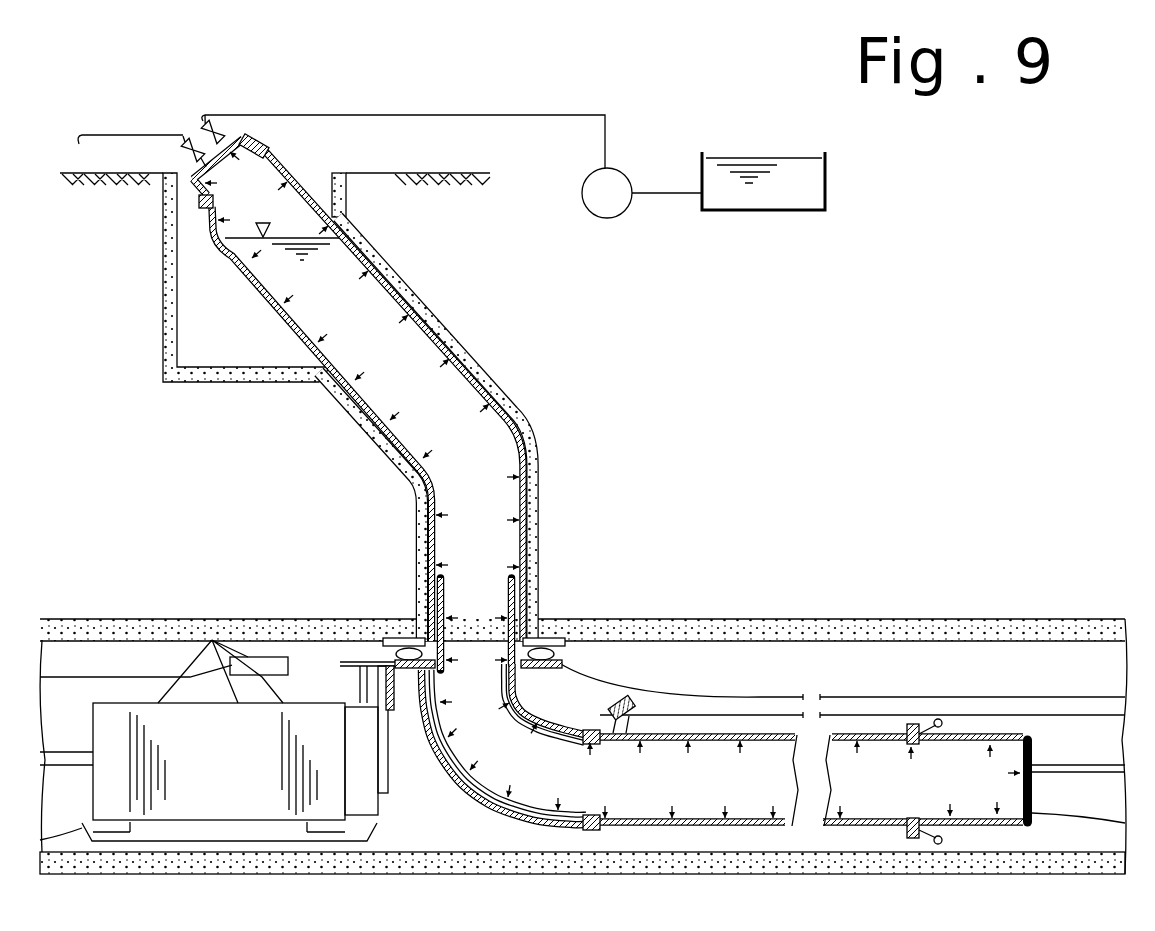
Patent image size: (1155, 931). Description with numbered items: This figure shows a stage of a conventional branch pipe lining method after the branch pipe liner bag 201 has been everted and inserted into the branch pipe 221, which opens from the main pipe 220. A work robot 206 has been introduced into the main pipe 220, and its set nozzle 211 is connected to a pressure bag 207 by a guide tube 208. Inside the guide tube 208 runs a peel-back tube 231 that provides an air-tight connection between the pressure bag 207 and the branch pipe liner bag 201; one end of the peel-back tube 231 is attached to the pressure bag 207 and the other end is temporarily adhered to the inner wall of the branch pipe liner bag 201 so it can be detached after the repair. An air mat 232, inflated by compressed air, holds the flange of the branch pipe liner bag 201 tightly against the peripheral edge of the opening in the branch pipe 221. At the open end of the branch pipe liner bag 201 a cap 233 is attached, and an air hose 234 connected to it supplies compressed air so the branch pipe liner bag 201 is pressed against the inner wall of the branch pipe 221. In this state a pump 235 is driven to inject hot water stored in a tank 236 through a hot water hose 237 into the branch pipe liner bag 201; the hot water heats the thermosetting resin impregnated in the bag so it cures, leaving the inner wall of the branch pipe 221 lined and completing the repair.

The branch pipe liner bag 201 is at (285, 176).
The work robot 206 is at (130, 728).
The pressure bag 207 is at (756, 733).
The guide tube 208 is at (444, 768).
The set nozzle 211 is at (380, 690).
The main pipe 220 is at (886, 620).
The branch pipe 221 is at (534, 436).
The peel-back tube 231 is at (446, 722).
The air mat 232 is at (560, 657).
The cap 233 is at (238, 137).
The air hose 234 is at (122, 133).
The pump 235 is at (596, 218).
The tank 236 is at (734, 212).
The hot water hose 237 is at (530, 114).